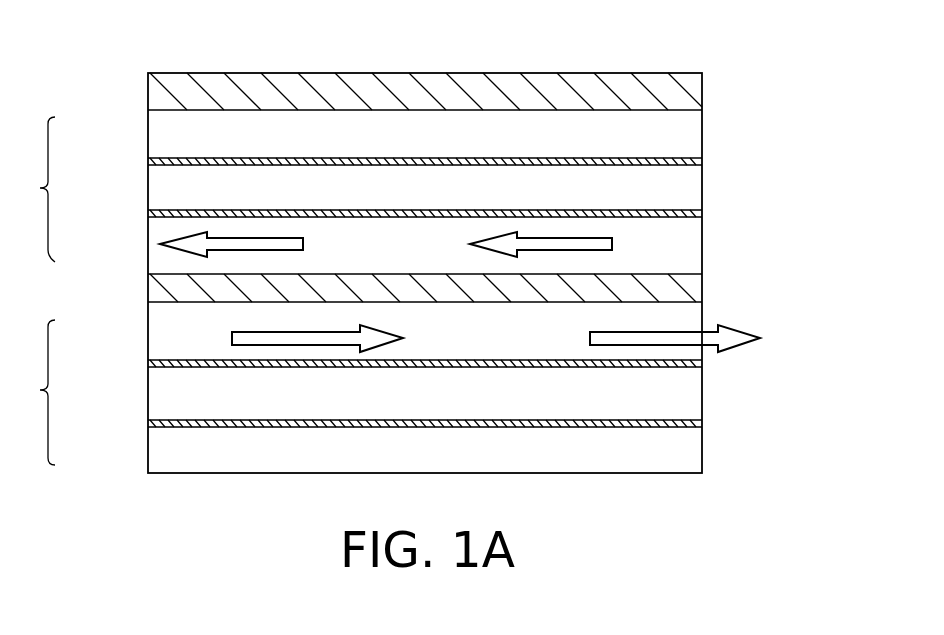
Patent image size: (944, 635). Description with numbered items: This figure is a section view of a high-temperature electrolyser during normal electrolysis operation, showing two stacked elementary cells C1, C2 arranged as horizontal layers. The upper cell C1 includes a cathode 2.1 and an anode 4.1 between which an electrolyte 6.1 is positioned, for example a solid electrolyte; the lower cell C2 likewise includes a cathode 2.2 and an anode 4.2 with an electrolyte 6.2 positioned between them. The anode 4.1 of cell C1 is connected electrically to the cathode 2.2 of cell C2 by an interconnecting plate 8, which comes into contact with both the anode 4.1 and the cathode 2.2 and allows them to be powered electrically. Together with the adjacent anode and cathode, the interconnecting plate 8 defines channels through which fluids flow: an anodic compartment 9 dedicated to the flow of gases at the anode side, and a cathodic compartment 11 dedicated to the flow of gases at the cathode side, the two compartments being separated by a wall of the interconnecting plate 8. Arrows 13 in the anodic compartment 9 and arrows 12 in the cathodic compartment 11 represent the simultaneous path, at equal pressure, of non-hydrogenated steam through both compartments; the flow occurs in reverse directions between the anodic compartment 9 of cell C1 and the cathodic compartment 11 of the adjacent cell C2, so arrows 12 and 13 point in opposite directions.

The interconnecting plate 8 is at (712, 217).
The elementary cell C1 is at (355, 189).
The elementary cell C2 is at (355, 392).
The cathode 2.1 is at (148, 161).
The electrolyte 6.1 is at (163, 190).
The anode 4.1 is at (148, 213).
The cathode 2.2 is at (148, 361).
The electrolyte 6.2 is at (163, 400).
The anode 4.2 is at (148, 423).
The anodic compartment 9 is at (421, 255).
The cathodic compartment 11 is at (502, 349).
The arrows 13 is at (217, 243).
The arrows 12 is at (305, 338).